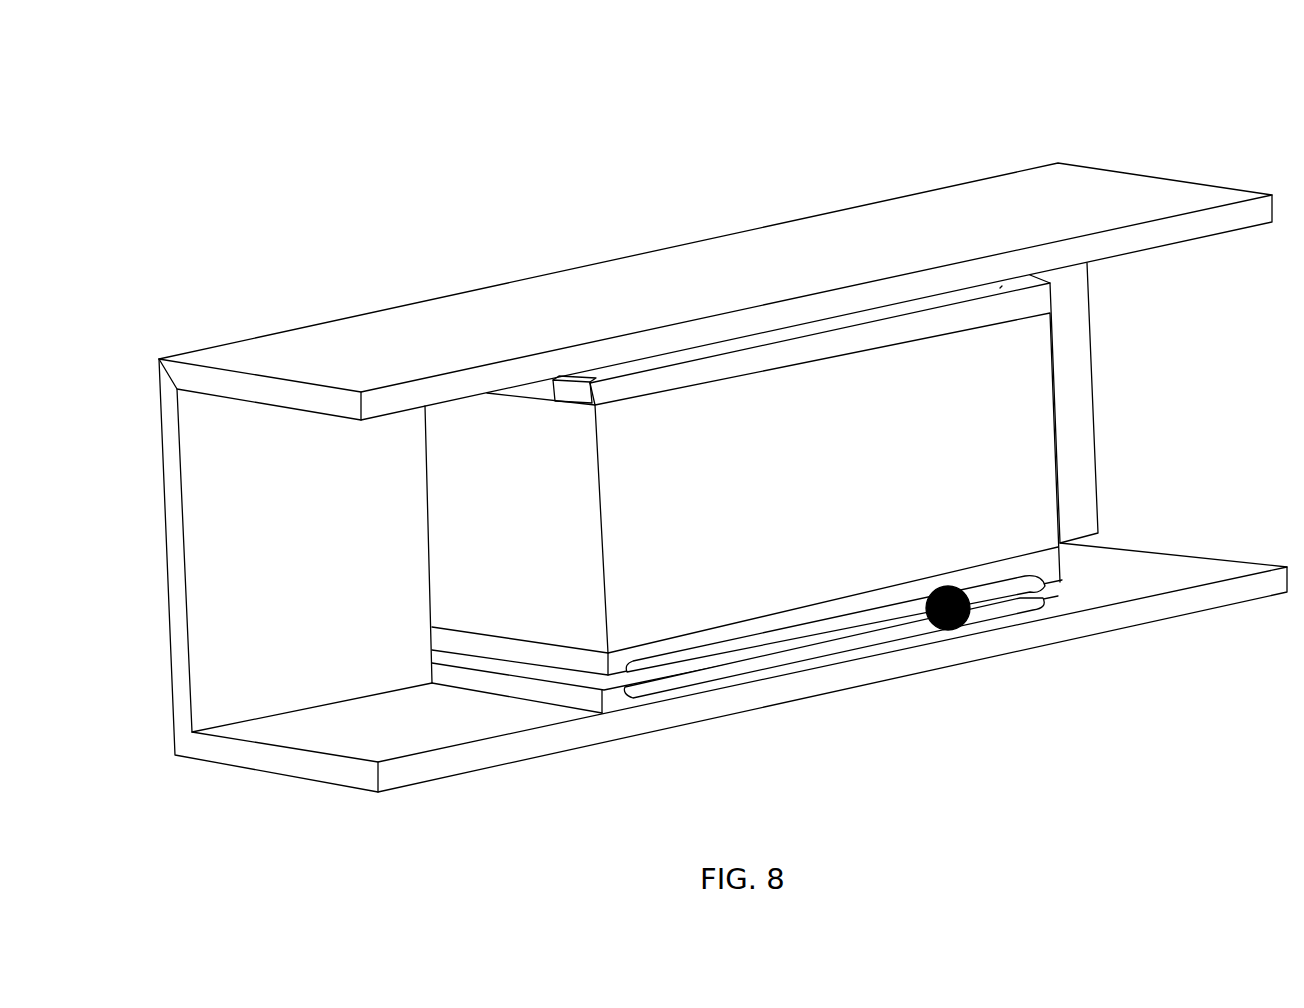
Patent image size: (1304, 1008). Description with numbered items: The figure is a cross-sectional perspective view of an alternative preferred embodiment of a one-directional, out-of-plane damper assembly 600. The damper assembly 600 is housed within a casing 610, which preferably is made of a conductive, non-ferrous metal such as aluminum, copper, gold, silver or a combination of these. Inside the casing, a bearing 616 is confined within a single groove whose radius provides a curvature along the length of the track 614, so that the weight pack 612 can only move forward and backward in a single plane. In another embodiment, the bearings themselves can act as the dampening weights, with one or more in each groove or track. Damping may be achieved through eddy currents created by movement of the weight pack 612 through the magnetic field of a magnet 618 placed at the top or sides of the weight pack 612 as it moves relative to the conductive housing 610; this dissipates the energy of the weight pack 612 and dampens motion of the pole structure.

The damper assembly 600 is at (723, 425).
The casing 610 is at (345, 337).
The weight pack 612 is at (965, 455).
The track 614 is at (878, 627).
The bearing 616 is at (946, 631).
The magnet 618 is at (1002, 287).